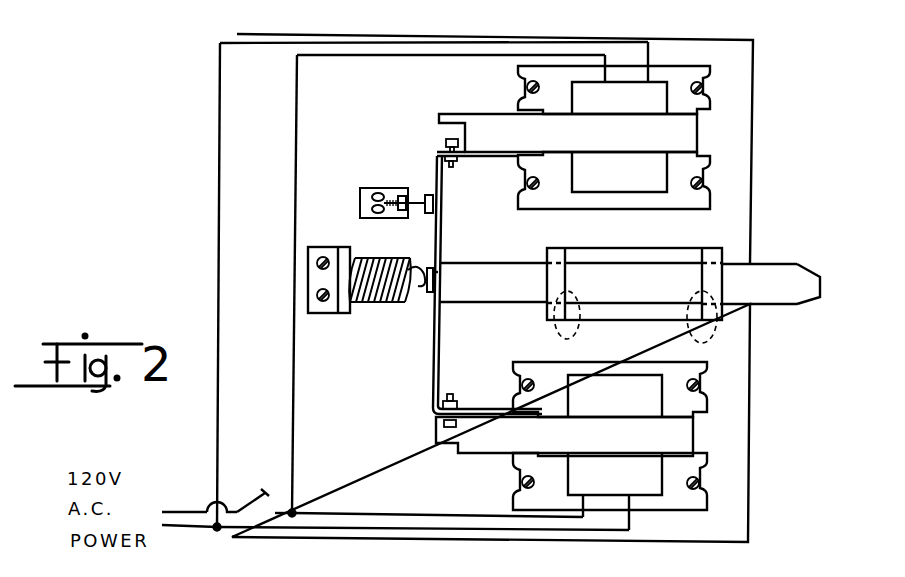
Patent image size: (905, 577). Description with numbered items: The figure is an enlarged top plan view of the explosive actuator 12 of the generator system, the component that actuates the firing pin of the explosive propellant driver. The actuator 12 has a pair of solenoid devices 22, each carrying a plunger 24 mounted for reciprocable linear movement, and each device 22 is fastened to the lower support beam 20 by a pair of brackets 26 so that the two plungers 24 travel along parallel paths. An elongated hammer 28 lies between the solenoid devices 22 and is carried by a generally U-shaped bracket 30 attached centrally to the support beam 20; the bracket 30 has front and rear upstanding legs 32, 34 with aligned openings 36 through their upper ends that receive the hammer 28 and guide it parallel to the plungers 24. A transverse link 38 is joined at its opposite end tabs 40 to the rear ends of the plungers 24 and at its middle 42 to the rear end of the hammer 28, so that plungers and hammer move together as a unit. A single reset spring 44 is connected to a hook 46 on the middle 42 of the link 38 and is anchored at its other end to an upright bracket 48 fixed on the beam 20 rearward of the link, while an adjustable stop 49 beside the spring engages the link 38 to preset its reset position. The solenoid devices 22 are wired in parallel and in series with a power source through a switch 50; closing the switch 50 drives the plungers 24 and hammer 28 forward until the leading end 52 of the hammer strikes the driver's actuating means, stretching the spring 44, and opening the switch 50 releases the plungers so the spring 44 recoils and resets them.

The explosive actuator 12 is at (798, 107).
The lower support beam 20 is at (755, 183).
The solenoid devices 22 is at (678, 196).
The plungers 24 is at (478, 116).
The brackets 26 is at (713, 107).
The hammer 28 is at (485, 303).
The U-shaped bracket 30 is at (700, 322).
The front upstanding leg 32 is at (712, 248).
The rear upstanding leg 34 is at (558, 248).
The openings 36 is at (572, 336).
The link 38 is at (432, 358).
The end tabs 40 is at (446, 168).
The middle of the link 42 is at (438, 278).
The reset spring 44 is at (380, 255).
The hook 46 is at (423, 290).
The upright bracket 48 is at (343, 313).
The adjustable stop 49 is at (373, 187).
The switch 50 is at (262, 490).
The leading end 52 is at (822, 280).